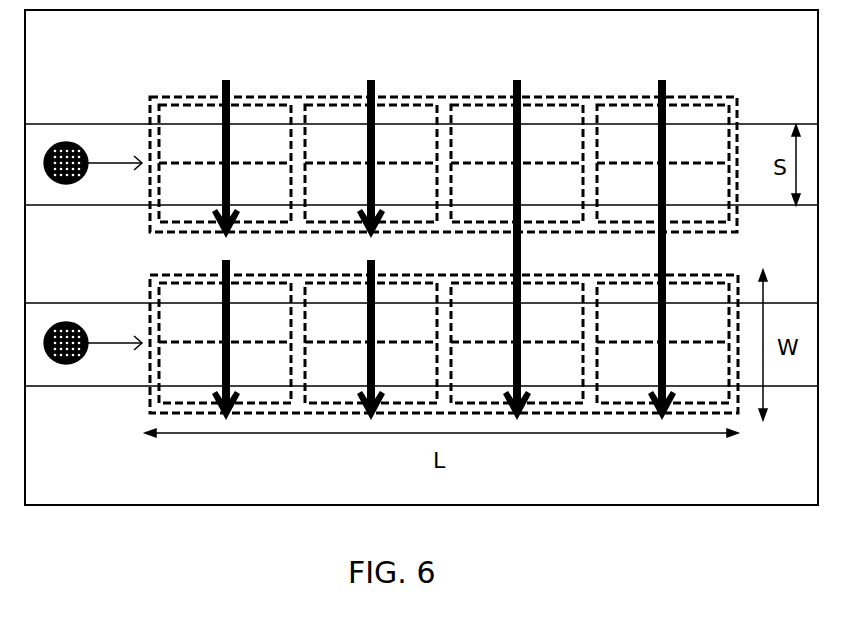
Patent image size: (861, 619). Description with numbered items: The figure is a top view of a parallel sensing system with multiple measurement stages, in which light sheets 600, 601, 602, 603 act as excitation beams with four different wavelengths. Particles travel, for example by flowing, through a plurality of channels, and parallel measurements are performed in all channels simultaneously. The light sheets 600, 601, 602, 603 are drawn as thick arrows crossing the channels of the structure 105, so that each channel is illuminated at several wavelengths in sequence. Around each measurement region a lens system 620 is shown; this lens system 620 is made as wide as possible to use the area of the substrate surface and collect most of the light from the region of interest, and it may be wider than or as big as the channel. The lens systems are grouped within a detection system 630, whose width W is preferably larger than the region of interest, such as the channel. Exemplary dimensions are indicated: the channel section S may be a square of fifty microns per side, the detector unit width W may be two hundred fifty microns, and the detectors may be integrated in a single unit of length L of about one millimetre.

The substrate / sample layer 105 is at (78, 495).
The light sheet 600 is at (225, 328).
The light sheet 601 is at (370, 113).
The light sheet 602 is at (517, 140).
The light sheet 603 is at (658, 140).
The lens system 620 is at (190, 117).
The detection system 630 is at (735, 100).